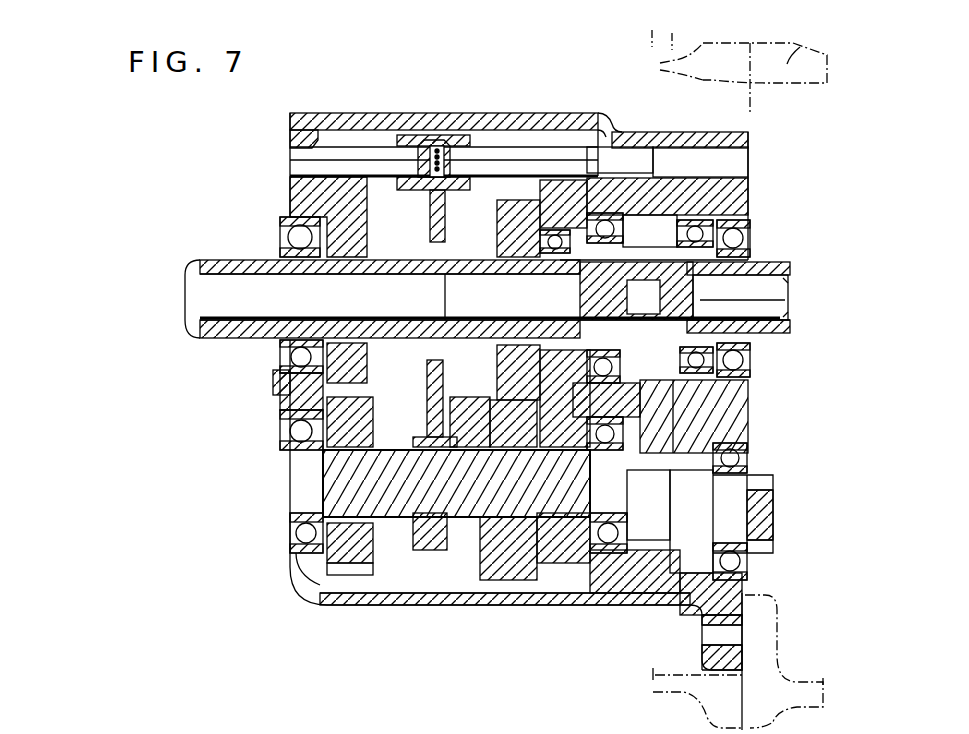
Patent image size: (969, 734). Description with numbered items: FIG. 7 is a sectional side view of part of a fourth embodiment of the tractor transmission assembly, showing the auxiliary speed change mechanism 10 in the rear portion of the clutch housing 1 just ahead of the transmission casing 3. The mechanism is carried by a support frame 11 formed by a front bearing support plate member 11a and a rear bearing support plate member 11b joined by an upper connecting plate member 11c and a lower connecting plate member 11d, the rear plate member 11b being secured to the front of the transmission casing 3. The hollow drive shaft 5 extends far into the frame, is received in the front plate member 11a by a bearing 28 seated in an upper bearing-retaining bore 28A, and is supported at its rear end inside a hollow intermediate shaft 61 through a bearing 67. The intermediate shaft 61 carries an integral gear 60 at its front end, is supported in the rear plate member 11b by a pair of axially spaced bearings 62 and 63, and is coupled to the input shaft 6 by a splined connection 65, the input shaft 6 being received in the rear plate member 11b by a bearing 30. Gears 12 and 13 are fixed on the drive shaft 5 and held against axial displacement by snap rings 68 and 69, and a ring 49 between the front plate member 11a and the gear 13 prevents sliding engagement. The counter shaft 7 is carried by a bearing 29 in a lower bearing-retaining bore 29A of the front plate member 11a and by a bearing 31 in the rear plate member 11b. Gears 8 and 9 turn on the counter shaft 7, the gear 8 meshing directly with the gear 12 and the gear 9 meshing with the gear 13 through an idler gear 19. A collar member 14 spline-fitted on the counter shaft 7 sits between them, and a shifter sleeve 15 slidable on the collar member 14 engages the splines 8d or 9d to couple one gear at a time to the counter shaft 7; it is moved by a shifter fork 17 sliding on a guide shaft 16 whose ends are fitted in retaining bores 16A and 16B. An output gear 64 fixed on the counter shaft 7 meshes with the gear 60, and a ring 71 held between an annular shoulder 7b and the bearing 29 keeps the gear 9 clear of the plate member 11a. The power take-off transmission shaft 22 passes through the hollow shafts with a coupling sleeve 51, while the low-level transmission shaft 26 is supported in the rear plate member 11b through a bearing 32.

The clutch housing 1 is at (682, 62).
The transmission casing 3 is at (800, 47).
The drive shaft 5 is at (275, 258).
The input shaft 6 is at (757, 264).
The counter shaft 7 is at (477, 592).
The annular shoulder 7b is at (308, 578).
The gear 8 is at (520, 578).
The splines 8d is at (470, 440).
The gear 9 is at (347, 562).
The splines 9d is at (412, 440).
The auxiliary speed change mechanism 10 is at (393, 572).
The support frame 11 is at (440, 612).
The front bearing support plate member 11a is at (283, 437).
The rear bearing support plate member 11b is at (727, 200).
The upper connecting plate member 11c is at (563, 120).
The lower connecting plate member 11d is at (553, 602).
The gear 12 is at (513, 198).
The gear 13 is at (355, 203).
The collar member 14 is at (436, 512).
The shifter sleeve 15 is at (433, 553).
The guide shaft 16 is at (393, 118).
The retaining bore 16A is at (298, 140).
The retaining bore 16B is at (637, 147).
The shifter fork 17 is at (457, 330).
The idler gear 19 is at (275, 397).
The transmission shaft 22 is at (770, 300).
The transmission shaft 26 is at (753, 518).
The bearing 28 is at (390, 299).
The upper bearing-retaining bore 28A is at (283, 222).
The bearing 29 is at (296, 456).
The lower bearing-retaining bore 29A is at (292, 542).
The bearing 30 is at (757, 228).
The bearing 31 is at (633, 514).
The bearing 32 is at (710, 530).
The ring 49 is at (495, 297).
The coupling sleeve 51 is at (712, 373).
The integral gear 60 is at (633, 163).
The hollow intermediate shaft 61 is at (660, 212).
The bearing 62 is at (658, 440).
The bearing 63 is at (727, 395).
The output gear 64 is at (594, 595).
The splined connection 65 is at (760, 336).
The bearing 67 is at (556, 337).
The snap ring 68 is at (493, 246).
The snap ring 69 is at (370, 245).
The ring 71 is at (372, 396).